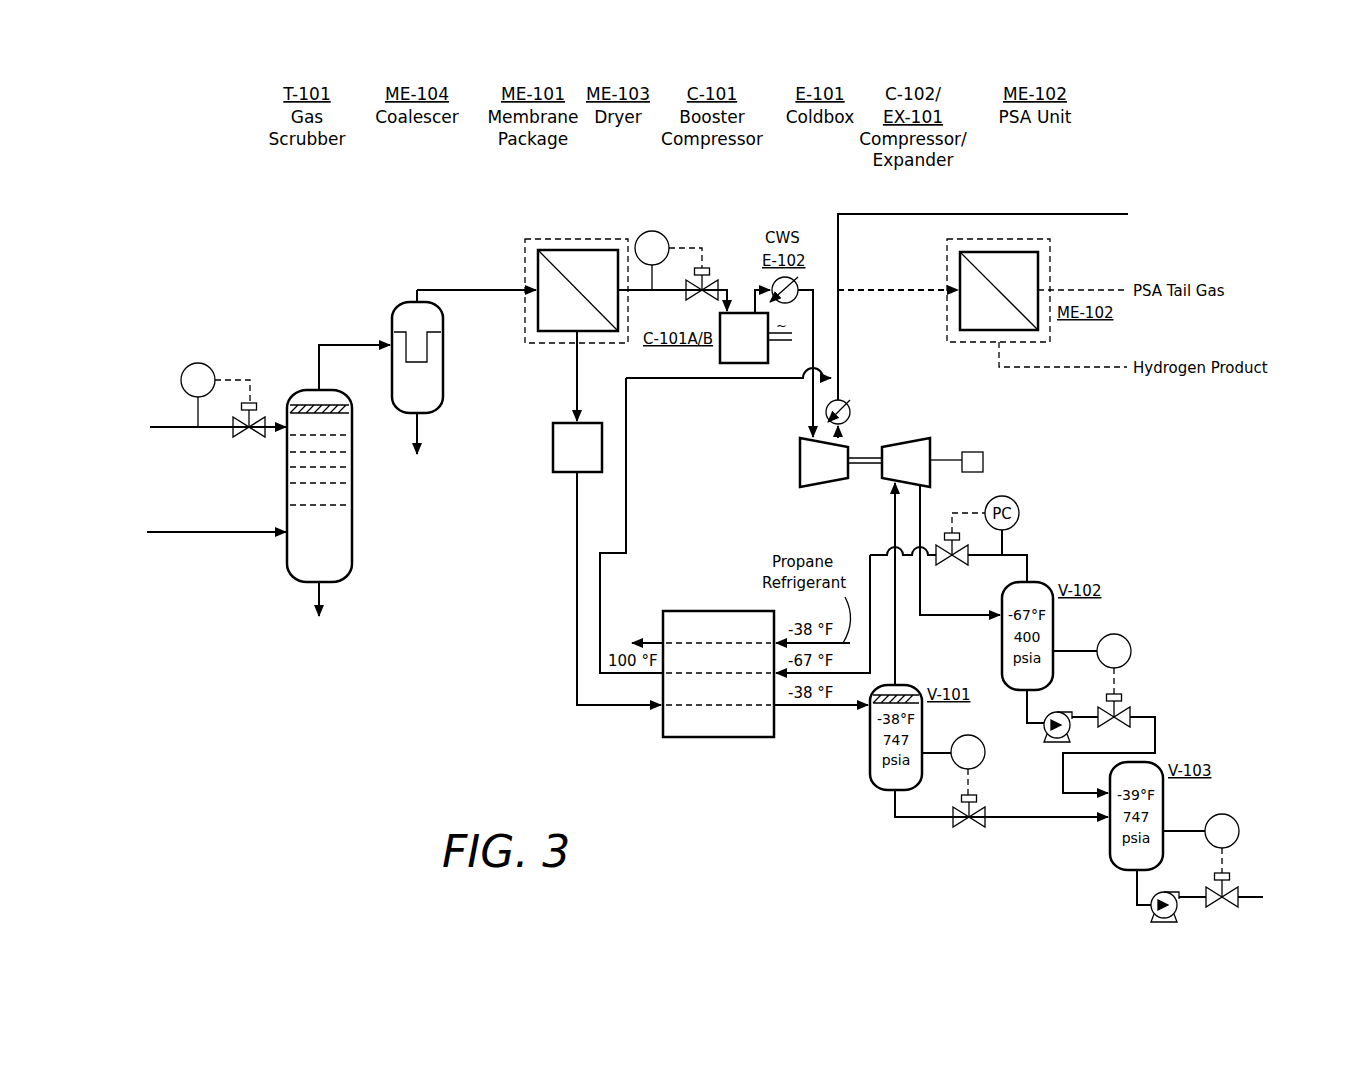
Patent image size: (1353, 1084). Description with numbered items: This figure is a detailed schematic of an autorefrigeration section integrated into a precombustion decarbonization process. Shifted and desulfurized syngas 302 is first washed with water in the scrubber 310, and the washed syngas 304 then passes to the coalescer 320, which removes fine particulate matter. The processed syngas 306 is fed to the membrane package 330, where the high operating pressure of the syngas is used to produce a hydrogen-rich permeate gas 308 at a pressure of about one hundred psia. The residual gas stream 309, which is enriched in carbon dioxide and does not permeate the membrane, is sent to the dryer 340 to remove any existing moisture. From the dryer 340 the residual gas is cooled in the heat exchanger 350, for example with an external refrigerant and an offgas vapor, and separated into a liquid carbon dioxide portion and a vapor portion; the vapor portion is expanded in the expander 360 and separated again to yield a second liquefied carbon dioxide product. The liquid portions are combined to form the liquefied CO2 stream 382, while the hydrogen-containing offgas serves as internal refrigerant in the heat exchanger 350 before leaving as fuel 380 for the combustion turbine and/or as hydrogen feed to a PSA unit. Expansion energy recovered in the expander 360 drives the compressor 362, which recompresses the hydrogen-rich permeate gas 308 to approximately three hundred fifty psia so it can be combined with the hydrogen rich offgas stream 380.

The shifted and desulfurized syngas 302 is at (243, 533).
The washed syngas 304 is at (340, 343).
The processed syngas 306 is at (455, 288).
The permeate gas 308 is at (723, 287).
The residual gas stream 309 is at (575, 380).
The scrubber 310 is at (353, 493).
The coalescer 320 is at (447, 360).
The membrane package 330 is at (618, 239).
The dryer 340 is at (560, 473).
The heat exchanger 350 is at (687, 738).
The expander 360 is at (927, 438).
The compressor 362 is at (813, 488).
The hydrogen rich offgas stream 380 is at (840, 332).
The liquefied CO2 stream 382 is at (1250, 898).